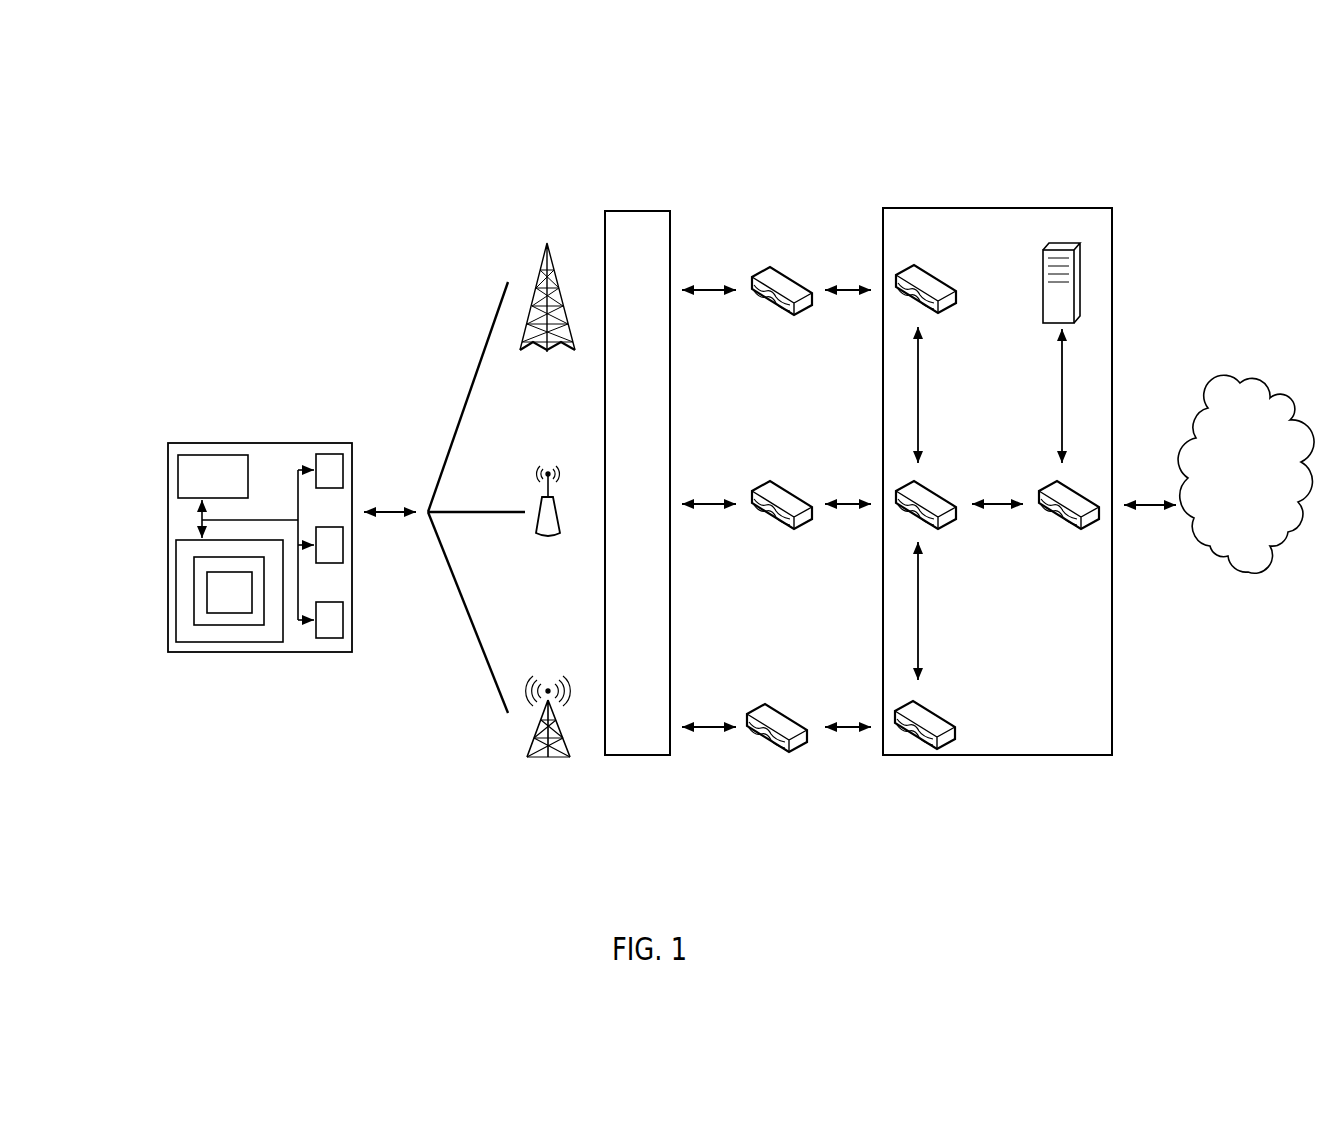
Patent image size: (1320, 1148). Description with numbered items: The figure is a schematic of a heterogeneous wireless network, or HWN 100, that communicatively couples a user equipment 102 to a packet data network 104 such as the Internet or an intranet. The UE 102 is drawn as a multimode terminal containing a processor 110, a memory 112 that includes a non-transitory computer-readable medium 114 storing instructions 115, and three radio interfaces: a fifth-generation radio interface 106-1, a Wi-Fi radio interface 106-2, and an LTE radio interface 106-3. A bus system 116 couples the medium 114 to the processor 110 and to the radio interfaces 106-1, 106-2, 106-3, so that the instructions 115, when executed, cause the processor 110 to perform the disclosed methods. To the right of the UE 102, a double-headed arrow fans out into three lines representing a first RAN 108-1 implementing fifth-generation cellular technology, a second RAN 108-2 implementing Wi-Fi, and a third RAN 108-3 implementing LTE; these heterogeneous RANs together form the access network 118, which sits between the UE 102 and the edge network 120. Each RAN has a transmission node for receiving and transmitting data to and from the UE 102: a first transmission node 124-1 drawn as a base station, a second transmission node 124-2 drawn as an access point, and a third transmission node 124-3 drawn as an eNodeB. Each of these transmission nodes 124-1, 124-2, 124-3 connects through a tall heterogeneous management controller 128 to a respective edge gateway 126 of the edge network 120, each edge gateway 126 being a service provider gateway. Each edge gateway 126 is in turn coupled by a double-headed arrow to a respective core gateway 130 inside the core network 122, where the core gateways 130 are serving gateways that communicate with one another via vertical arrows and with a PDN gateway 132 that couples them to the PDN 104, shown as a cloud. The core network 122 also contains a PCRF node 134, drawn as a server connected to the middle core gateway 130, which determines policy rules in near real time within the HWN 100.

The heterogeneous wireless network (HWN) 100 is at (326, 148).
The user equipment (UE) 102 is at (206, 443).
The packet data network (PDN) 104 is at (1246, 474).
The 5G radio interface 106-1 is at (343, 466).
The Wi-Fi radio interface 106-2 is at (343, 555).
The LTE radio interface 106-3 is at (343, 623).
The first RAN 108-1 is at (472, 392).
The second RAN 108-2 is at (447, 510).
The third RAN 108-3 is at (472, 610).
The processor 110 is at (213, 476).
The memory 112 is at (176, 558).
The non-transitory computer-readable medium 114 is at (194, 597).
The instructions 115 is at (207, 610).
The bus system 116 is at (284, 518).
The access network 118 is at (590, 178).
The edge network 120 is at (790, 180).
The core network 122 is at (1030, 172).
The first transmission node 124-1 is at (548, 242).
The second transmission node 124-2 is at (548, 471).
The third transmission node 124-3 is at (548, 690).
The edge gateway 126 is at (790, 276).
The heterogeneous management controller 128 is at (637, 483).
The core gateway 130 is at (937, 275).
The PDN gateway 132 is at (1077, 530).
The PCRF node 134 is at (1080, 300).